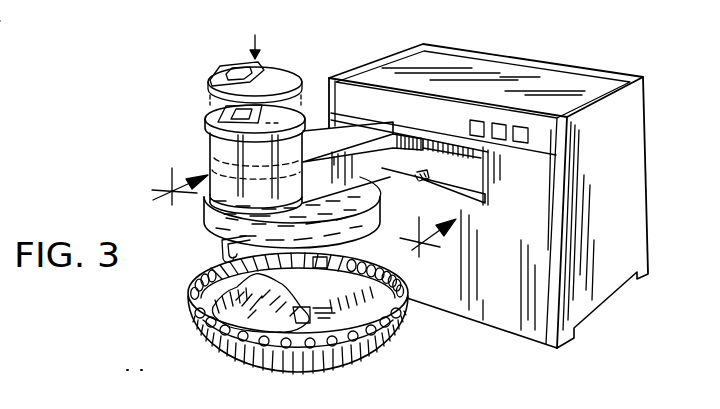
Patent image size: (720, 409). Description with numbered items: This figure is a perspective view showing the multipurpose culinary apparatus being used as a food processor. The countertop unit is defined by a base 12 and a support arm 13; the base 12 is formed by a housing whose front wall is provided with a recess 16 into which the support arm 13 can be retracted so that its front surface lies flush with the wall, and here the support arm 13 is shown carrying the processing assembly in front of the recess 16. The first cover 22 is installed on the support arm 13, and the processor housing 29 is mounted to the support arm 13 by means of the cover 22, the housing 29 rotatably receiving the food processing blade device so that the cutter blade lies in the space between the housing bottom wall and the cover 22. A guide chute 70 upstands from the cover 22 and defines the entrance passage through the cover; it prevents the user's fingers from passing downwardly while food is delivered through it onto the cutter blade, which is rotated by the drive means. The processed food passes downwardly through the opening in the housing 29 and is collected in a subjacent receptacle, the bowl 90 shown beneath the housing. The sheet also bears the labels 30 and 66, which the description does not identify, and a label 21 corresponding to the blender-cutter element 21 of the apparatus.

The base 12 is at (533, 70).
The support arm 13 is at (316, 123).
The recess 16 is at (479, 183).
The first cover 22 is at (358, 192).
The processor housing 29 is at (370, 228).
The control panel 30 is at (467, 127).
The guide chute 70 is at (212, 150).
The bowl 90 is at (394, 322).
The component of adjacent figure 66 is at (12, 13).
The blender-cutter element 21 is at (44, 0).